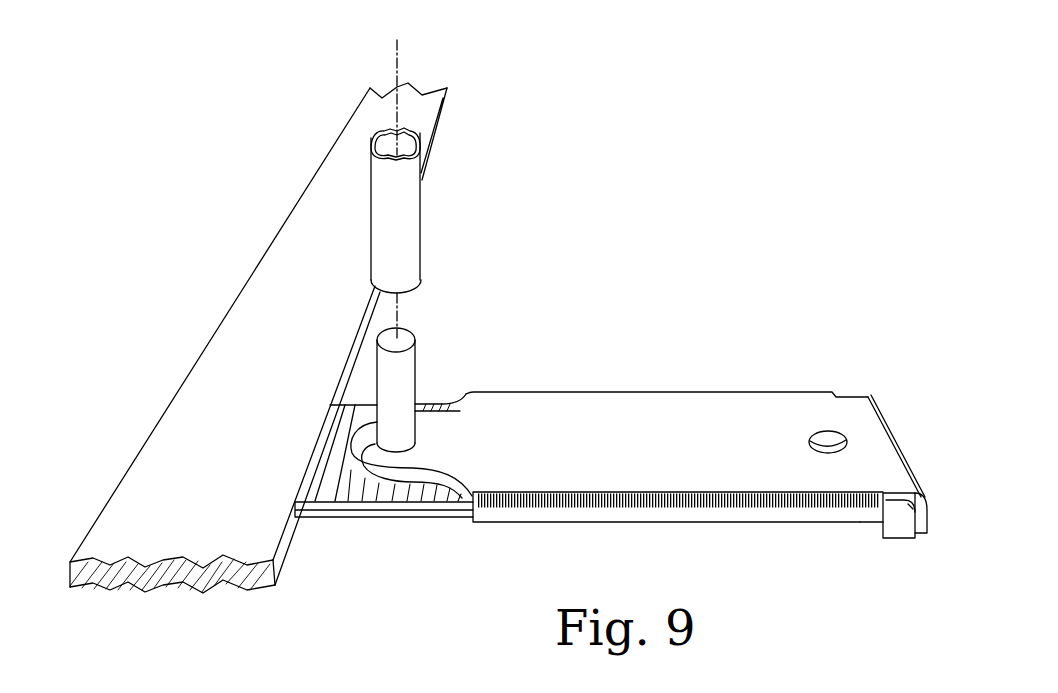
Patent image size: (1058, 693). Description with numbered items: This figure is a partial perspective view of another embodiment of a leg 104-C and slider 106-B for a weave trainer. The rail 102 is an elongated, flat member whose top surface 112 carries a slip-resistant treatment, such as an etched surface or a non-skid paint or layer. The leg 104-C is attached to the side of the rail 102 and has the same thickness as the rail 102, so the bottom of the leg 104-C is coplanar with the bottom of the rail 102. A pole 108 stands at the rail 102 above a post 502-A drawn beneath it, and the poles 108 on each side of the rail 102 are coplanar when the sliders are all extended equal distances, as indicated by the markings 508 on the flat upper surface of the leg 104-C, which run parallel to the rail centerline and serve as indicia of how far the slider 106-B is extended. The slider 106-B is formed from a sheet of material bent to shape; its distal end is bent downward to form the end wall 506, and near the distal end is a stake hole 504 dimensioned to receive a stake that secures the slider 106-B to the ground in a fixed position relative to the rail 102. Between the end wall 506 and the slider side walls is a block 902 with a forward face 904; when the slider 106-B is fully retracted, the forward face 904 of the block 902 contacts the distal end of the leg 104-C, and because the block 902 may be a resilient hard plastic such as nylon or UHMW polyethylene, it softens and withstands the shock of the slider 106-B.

The rail 102 is at (246, 280).
The top surface 112 is at (333, 290).
The pole 108 is at (422, 258).
The post 502-A is at (415, 373).
The slider 106-B is at (673, 390).
The stake hole 504 is at (828, 430).
The end wall 506 is at (922, 498).
The markings 508 is at (317, 490).
The leg 104-C is at (353, 516).
The block 902 is at (902, 540).
The forward face 904 is at (883, 520).